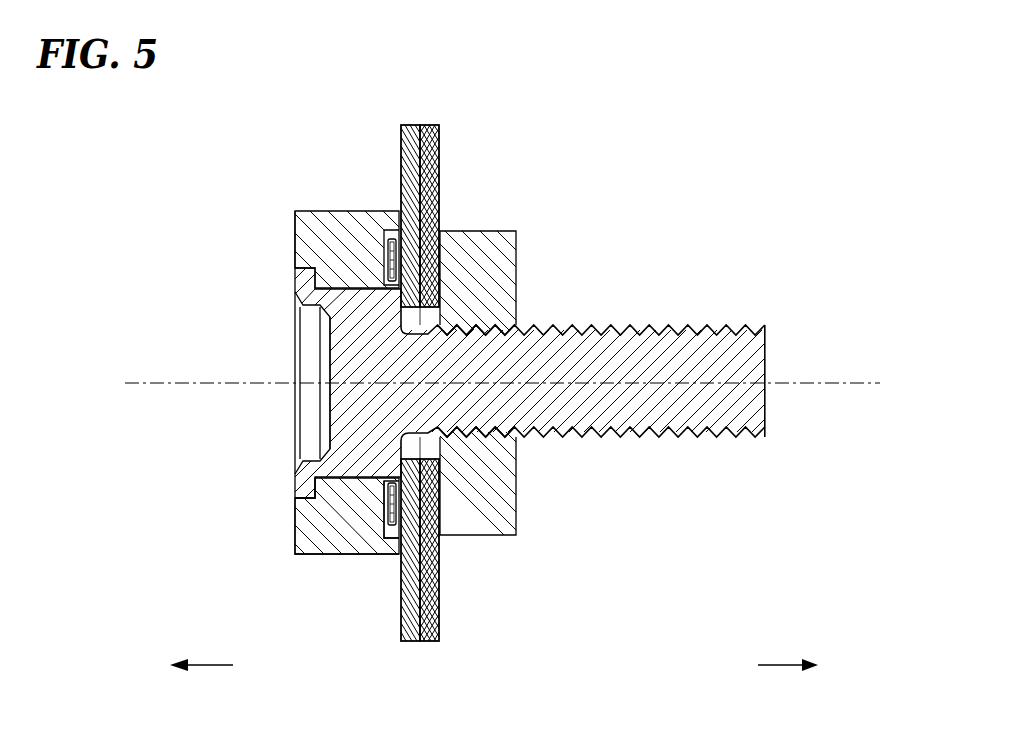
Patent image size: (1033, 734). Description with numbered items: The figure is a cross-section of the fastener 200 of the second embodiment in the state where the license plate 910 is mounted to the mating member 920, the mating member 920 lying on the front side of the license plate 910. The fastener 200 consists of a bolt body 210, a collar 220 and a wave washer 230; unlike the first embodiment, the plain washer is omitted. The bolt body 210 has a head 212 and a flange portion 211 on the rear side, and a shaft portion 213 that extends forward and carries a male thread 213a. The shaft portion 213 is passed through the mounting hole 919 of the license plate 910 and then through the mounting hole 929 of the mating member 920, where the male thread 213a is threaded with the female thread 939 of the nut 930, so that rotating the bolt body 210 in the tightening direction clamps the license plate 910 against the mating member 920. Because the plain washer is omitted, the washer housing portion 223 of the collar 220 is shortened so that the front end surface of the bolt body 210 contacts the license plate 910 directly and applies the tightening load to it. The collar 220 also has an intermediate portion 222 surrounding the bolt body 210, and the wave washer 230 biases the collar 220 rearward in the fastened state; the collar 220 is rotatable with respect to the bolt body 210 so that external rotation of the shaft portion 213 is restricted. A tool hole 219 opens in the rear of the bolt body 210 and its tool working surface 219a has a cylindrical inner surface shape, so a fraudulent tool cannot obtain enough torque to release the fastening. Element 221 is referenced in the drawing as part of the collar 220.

The fastener 200 is at (258, 135).
The bolt body 210 is at (297, 290).
The flange portion 211 is at (310, 480).
The head 212 is at (355, 400).
The shaft portion 213 is at (690, 440).
The male thread 213a is at (722, 324).
The tool hole 219 is at (310, 322).
The tool working surface 219a is at (302, 446).
The collar 220 is at (298, 240).
The holder body 221 is at (304, 524).
The intermediate portion 222 is at (341, 524).
The washer housing portion 223 is at (386, 548).
The wave washer 230 is at (387, 258).
The license plate 910 is at (445, 155).
The mating member 920 is at (440, 155).
The nut 930 is at (516, 270).
The mounting hole 919 is at (440, 545).
The mounting hole 929 is at (470, 508).
The female thread 939 is at (500, 340).